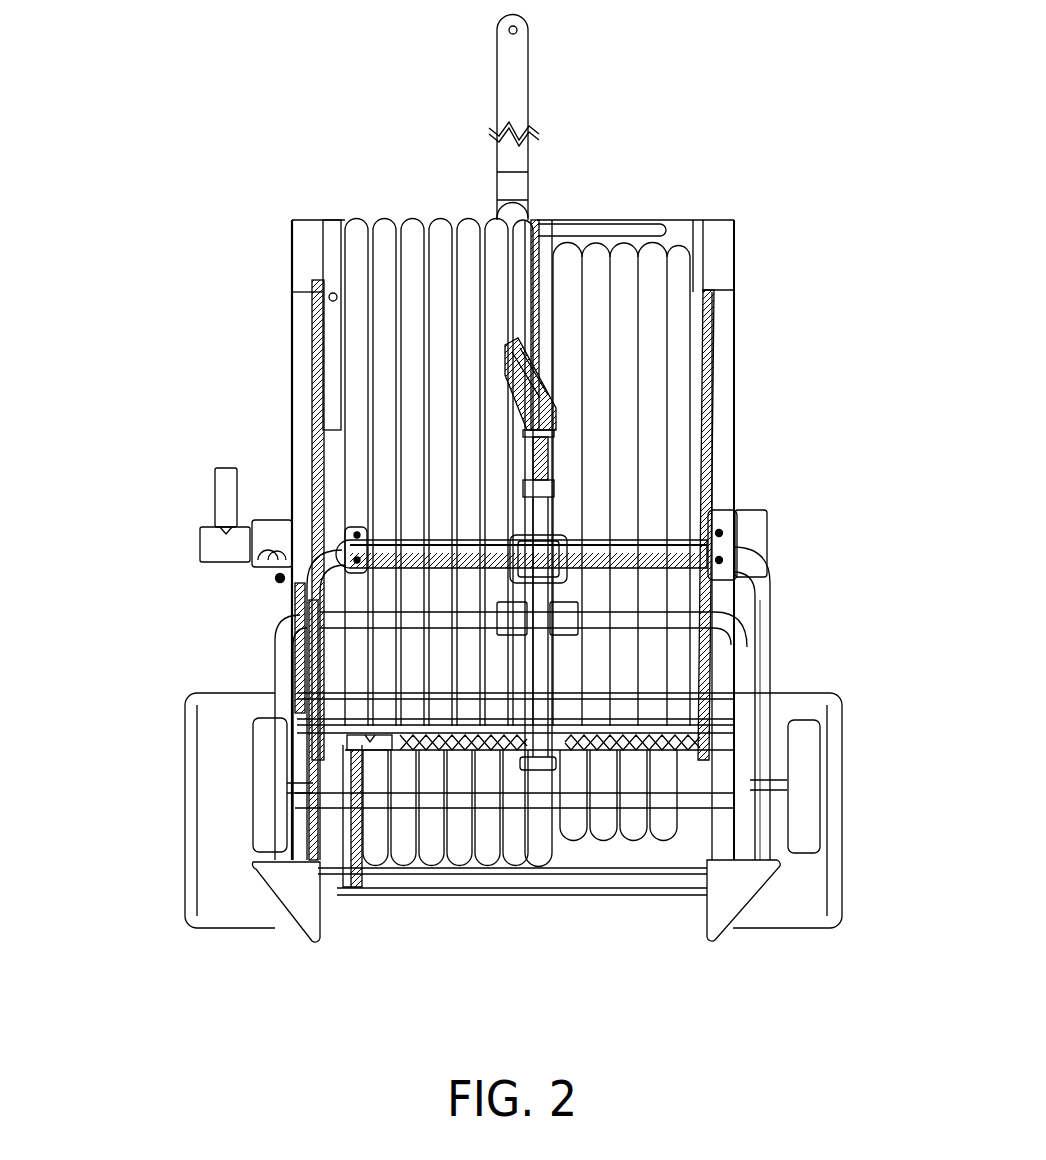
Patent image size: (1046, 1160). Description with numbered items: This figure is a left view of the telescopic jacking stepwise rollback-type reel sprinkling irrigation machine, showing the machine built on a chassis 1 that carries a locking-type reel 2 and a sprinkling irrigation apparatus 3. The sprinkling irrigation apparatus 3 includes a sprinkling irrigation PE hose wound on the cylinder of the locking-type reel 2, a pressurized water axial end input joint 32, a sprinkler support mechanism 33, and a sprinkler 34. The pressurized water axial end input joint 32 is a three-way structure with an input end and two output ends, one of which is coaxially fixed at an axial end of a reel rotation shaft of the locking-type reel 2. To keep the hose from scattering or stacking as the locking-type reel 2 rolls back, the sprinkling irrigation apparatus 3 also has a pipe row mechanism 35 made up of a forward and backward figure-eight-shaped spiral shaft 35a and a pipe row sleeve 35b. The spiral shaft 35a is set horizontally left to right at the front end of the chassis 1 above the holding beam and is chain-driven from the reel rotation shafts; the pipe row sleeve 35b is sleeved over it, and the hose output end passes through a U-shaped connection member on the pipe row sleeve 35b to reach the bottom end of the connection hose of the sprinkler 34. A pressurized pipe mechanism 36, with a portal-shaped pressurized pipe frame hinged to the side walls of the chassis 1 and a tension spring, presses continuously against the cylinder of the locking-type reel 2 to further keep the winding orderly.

The chassis 1 is at (738, 877).
The locking-type reel 2 is at (705, 247).
The sprinkling irrigation apparatus 3 is at (553, 461).
The pressurized water axial end input joint 32 is at (217, 543).
The sprinkler support mechanism 33 is at (633, 550).
The sprinkler 34 is at (553, 405).
The pipe row mechanism 35 is at (597, 738).
The forward and backward 8-shaped spiral shaft 35a is at (667, 747).
The pipe row sleeve 35b is at (345, 745).
The pressurized pipe mechanism 36 is at (588, 232).